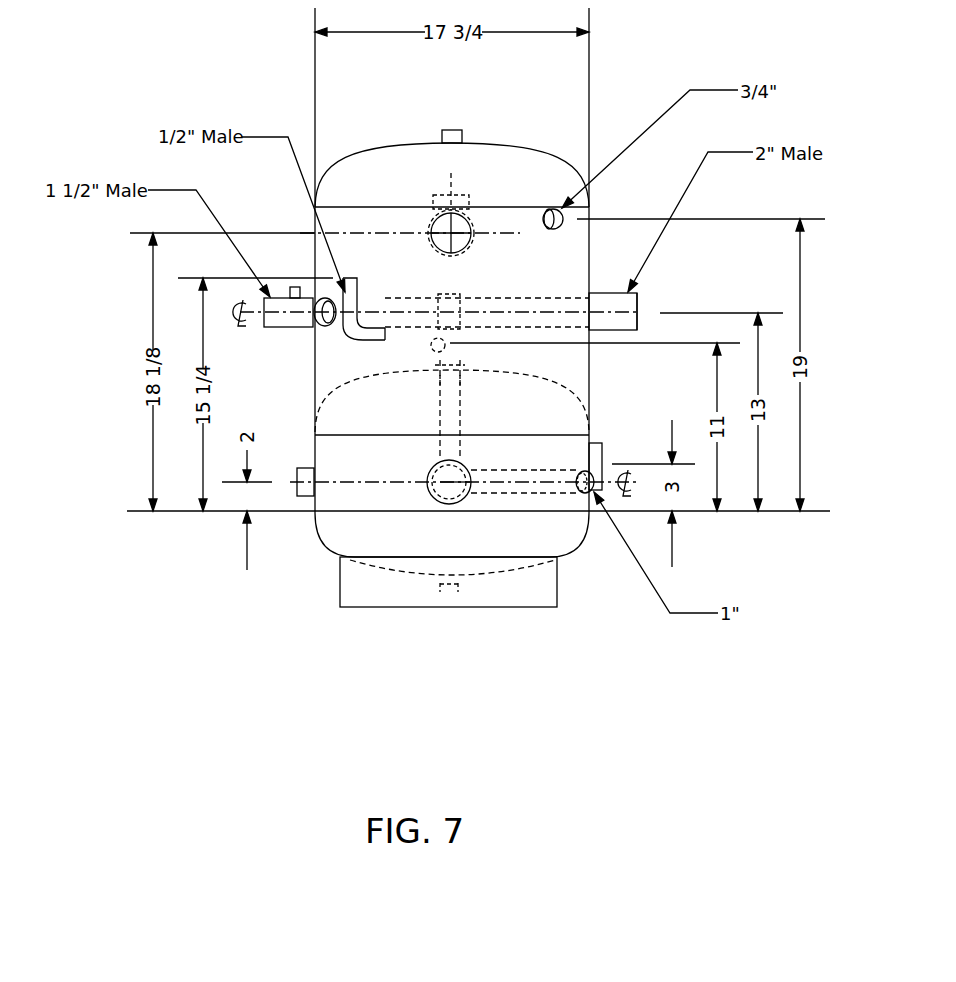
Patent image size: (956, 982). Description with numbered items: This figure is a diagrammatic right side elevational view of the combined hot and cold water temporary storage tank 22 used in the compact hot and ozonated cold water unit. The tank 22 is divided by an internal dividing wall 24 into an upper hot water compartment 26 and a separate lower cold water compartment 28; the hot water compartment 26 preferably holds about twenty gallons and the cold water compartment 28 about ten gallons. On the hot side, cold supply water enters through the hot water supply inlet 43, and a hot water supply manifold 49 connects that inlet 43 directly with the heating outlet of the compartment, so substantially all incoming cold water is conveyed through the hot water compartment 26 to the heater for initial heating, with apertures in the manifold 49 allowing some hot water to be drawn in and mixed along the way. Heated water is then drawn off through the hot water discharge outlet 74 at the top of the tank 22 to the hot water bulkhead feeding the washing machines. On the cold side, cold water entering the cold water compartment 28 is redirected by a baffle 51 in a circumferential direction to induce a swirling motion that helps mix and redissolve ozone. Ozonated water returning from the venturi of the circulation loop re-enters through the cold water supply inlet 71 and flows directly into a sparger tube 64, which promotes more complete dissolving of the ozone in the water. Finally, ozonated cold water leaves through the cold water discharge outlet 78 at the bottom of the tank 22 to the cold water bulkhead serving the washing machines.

The combined hot and cold water temporary storage tank 22 is at (508, 145).
The internal dividing wall 24 is at (360, 385).
The hot water compartment 26 is at (533, 275).
The cold water compartment 28 is at (408, 423).
The hot water supply inlet 43 is at (638, 302).
The hot water supply manifold 49 is at (556, 297).
The baffle 51 is at (320, 553).
The sparger tube 64 is at (497, 470).
The cold water supply inlet 71 is at (590, 490).
The hot water discharge outlet 74 is at (432, 223).
The cold water discharge outlet 78 is at (434, 485).